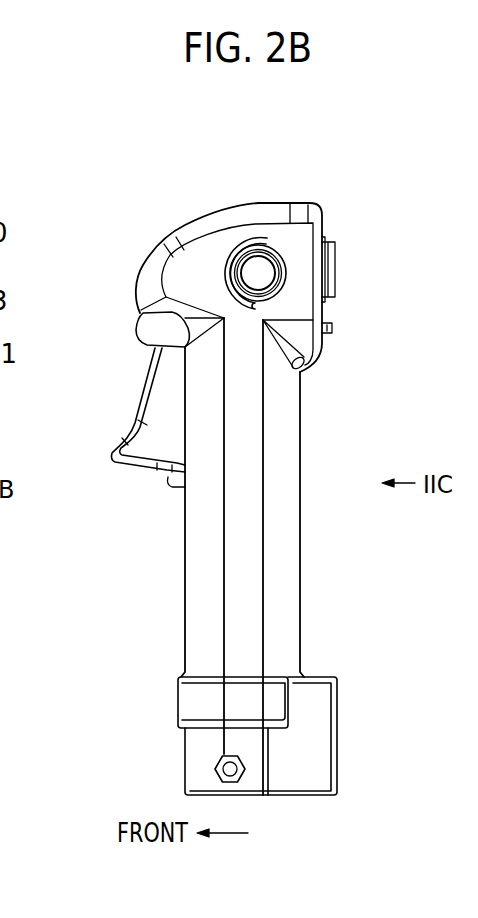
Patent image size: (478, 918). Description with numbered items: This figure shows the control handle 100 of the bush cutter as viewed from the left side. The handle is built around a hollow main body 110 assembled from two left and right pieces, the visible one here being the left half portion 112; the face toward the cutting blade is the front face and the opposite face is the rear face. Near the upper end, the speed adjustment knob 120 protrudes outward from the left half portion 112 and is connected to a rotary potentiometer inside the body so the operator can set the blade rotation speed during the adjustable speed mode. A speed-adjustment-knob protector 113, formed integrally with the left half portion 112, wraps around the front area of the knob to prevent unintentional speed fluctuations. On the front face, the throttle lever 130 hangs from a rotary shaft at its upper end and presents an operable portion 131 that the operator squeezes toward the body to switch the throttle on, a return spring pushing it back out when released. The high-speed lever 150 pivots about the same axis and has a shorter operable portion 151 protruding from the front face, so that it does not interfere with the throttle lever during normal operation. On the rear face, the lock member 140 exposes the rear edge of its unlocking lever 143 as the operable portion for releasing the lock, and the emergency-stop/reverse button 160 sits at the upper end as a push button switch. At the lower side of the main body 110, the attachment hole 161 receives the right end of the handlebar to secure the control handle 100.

The control handle 100 is at (130, 146).
The main body 110 is at (274, 499).
The left half portion 112 is at (247, 435).
The speed-adjustment-knob protector 113 is at (247, 250).
The speed adjustment knob 120 is at (266, 268).
The throttle lever 130 is at (96, 417).
The operable portion 131 is at (133, 404).
The lock member 140 is at (383, 328).
The unlocking lever 143 is at (334, 333).
The high-speed lever 150 is at (145, 278).
The operable portion 151 is at (152, 327).
The emergency-stop/reverse button 160 is at (335, 270).
The attachment hole 161 is at (195, 790).